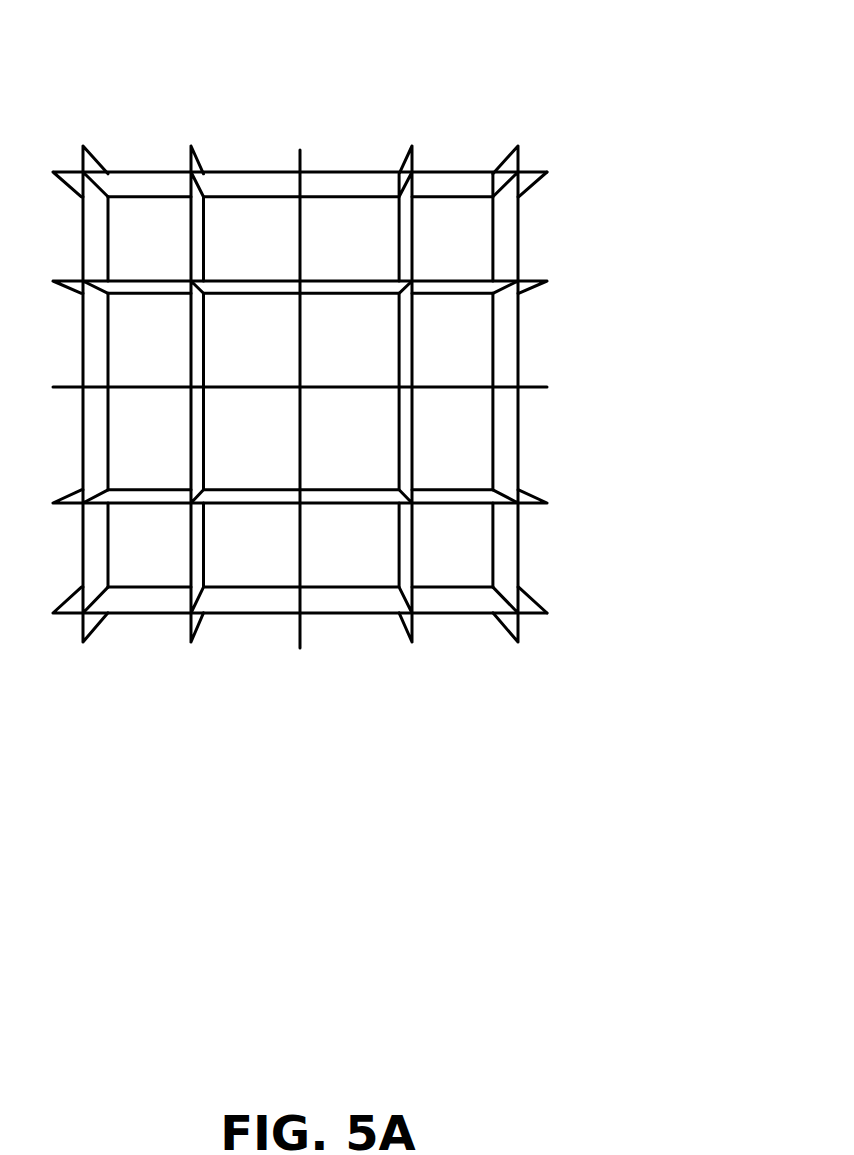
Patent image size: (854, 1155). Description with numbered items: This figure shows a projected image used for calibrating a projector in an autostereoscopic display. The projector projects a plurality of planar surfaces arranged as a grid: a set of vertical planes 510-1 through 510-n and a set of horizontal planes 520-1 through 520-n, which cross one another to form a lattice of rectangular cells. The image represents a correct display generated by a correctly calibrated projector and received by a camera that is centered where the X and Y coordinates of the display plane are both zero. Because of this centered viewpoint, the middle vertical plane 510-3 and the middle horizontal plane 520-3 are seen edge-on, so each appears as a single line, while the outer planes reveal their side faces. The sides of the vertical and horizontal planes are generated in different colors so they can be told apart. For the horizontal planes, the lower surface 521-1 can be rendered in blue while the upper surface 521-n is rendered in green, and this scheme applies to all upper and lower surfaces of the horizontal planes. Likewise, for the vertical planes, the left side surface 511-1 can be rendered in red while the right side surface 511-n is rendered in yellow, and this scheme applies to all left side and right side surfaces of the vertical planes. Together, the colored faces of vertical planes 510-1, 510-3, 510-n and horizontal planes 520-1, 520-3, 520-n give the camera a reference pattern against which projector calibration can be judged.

The vertical plane 510-1 is at (83, 146).
The vertical plane 510-3 is at (300, 648).
The vertical plane 510-n is at (518, 147).
The left side surface 511-1 is at (88, 580).
The right side surface 511-n is at (508, 567).
The horizontal plane 520-n is at (352, 172).
The horizontal plane 520-3 is at (547, 387).
The horizontal plane 520-1 is at (548, 613).
The upper surface 521-n is at (527, 190).
The lower surface 521-1 is at (525, 590).